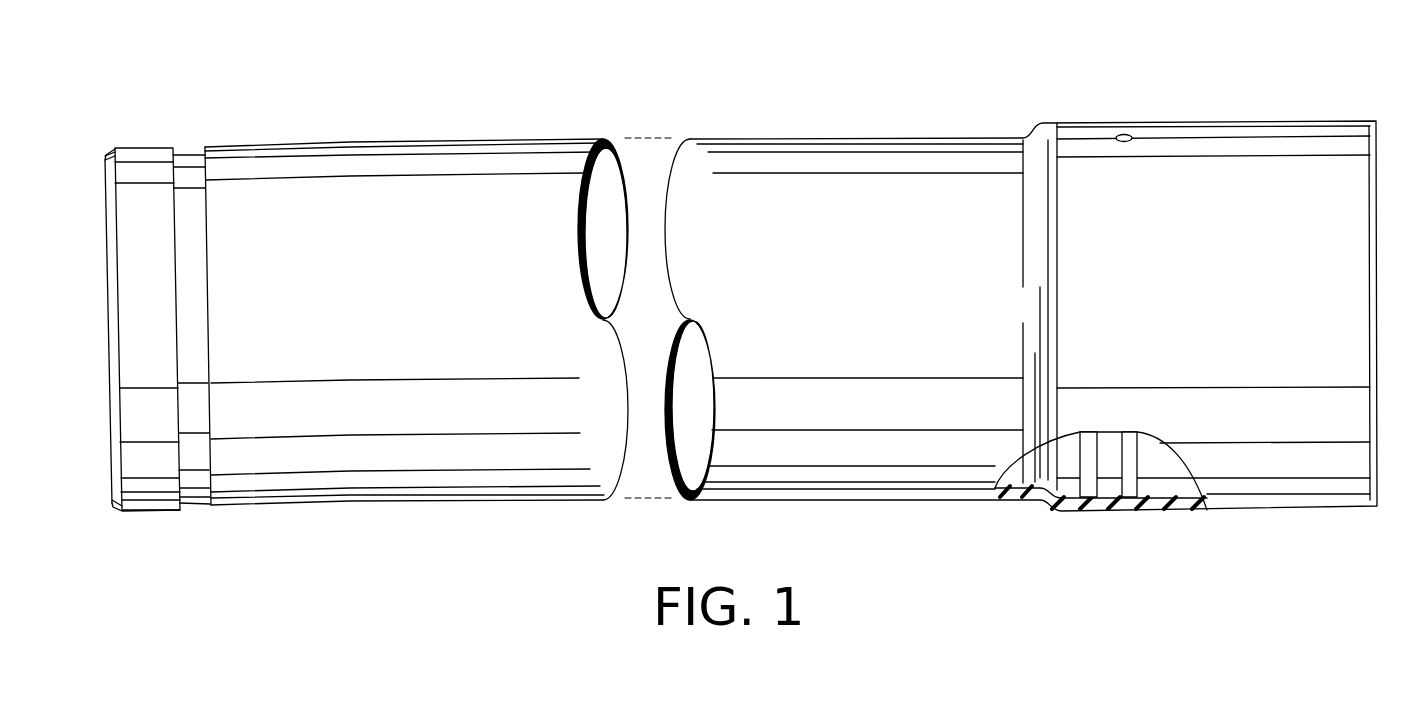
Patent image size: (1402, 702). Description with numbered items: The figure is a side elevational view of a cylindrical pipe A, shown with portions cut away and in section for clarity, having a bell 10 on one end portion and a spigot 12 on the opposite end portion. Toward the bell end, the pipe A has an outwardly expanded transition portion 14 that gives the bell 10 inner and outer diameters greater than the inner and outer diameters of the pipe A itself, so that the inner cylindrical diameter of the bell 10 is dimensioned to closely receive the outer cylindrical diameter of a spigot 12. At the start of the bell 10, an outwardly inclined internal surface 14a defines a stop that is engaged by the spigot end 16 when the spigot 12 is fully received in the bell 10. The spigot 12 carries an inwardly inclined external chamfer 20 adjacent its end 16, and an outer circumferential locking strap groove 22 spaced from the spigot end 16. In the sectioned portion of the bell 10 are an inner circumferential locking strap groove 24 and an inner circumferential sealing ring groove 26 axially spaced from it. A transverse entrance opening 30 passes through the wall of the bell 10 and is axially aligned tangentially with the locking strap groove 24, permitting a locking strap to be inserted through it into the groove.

The cylindrical pipe A is at (515, 133).
The bell 10 is at (1256, 121).
The spigot 12 is at (138, 148).
The outwardly expanded transition portion 14 is at (1047, 508).
The outwardly inclined internal surface 14a is at (1045, 482).
The spigot end 16 is at (104, 166).
The external chamfer 20 is at (115, 508).
The outer circumferential locking strap groove 22 is at (197, 503).
The inner circumferential locking strap groove 24 is at (1132, 512).
The inner circumferential sealing ring groove 26 is at (1088, 500).
The transverse entrance opening 30 is at (1126, 134).